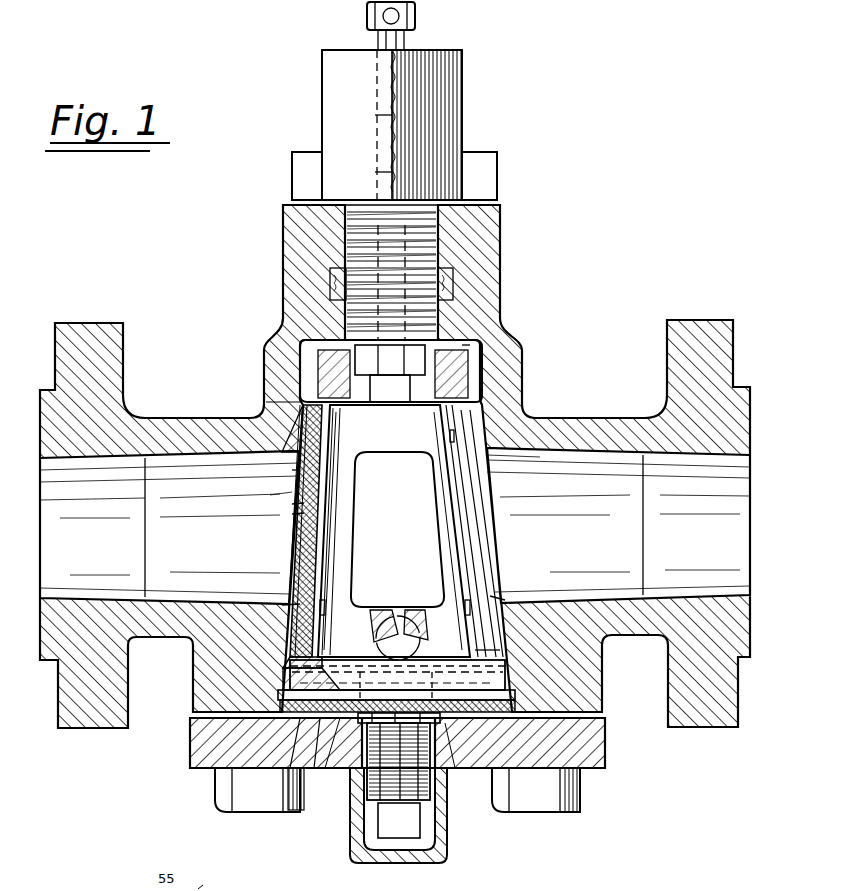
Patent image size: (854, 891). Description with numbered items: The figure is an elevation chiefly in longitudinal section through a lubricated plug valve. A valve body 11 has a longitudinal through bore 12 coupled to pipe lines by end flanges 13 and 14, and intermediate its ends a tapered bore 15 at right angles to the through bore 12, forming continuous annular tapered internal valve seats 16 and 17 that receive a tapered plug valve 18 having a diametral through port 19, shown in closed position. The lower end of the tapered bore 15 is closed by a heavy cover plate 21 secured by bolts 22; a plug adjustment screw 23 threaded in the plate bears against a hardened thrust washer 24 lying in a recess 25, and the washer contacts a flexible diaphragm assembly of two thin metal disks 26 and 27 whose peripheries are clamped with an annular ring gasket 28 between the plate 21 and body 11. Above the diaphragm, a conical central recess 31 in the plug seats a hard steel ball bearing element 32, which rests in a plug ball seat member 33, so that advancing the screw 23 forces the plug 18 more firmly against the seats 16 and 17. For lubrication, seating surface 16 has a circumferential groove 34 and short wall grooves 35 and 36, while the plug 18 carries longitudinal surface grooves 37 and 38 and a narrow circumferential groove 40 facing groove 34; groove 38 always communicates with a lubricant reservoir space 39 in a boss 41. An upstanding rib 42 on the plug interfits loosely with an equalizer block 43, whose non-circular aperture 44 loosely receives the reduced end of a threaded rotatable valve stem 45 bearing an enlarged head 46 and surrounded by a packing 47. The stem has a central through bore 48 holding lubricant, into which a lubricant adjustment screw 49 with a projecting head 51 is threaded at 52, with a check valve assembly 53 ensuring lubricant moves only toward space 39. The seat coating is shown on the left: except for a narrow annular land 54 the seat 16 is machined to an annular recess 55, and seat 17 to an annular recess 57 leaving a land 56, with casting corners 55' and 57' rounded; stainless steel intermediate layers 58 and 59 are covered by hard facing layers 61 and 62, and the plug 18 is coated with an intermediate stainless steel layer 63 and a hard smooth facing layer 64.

The valve body 11 is at (558, 412).
The longitudinal through bore 12 is at (200, 458).
The end flange 13 is at (104, 323).
The end flange 14 is at (696, 320).
The tapered bore 15 is at (495, 562).
The tapered internal valve seat 16 is at (497, 594).
The tapered internal valve seat 17 is at (486, 460).
The tapered plug valve 18 is at (494, 515).
The diametral through port 19 is at (357, 498).
The cover plate 21 is at (605, 748).
The bolts 22 is at (250, 805).
The plug adjustment screw 23 is at (428, 805).
The thrust washer 24 is at (350, 730).
The recess 25 is at (445, 730).
The diaphragm disk 26 is at (300, 728).
The diaphragm disk 27 is at (300, 800).
The annular ring gasket 28 is at (505, 685).
The conical central recess 31 is at (398, 618).
The ball bearing element 32 is at (390, 612).
The plug ball seat member 33 is at (430, 683).
The circumferential groove 34 is at (283, 672).
The short wall groove 35 is at (462, 627).
The short wall groove 36 is at (322, 642).
The longitudinal surface groove 37 is at (450, 443).
The longitudinal surface groove 38 is at (337, 441).
The lubricant reservoir space 39 is at (482, 366).
The circumferential groove 40 is at (446, 655).
The boss 41 is at (512, 334).
The diametrical upstanding rib 42 is at (388, 398).
The equalizer block 43 is at (464, 345).
The non-circular aperture 44 is at (390, 408).
The threaded rotatable valve stem 45 is at (432, 242).
The enlarged head 46 is at (462, 96).
The packing 47 is at (448, 290).
The central through bore 48 is at (395, 112).
The lubricant adjustment screw 49 is at (406, 40).
The projecting head 51 is at (415, 8).
The threaded portion 52 is at (400, 138).
The check valve assembly 53 is at (420, 268).
The annular land 54 is at (280, 695).
The annular recess 55 is at (287, 536).
The casting corner 55' is at (271, 531).
The annular land 56 is at (334, 422).
The annular recess 57 is at (284, 428).
The casting corner 57' is at (266, 513).
The stainless steel intermediate layer 58 is at (292, 606).
The stainless steel intermediate layer 59 is at (298, 414).
The hard facing layer 61 is at (305, 486).
The hard facing layer 62 is at (295, 600).
The intermediate stainless steel layer 63 is at (303, 514).
The hard smooth facing layer 64 is at (304, 503).